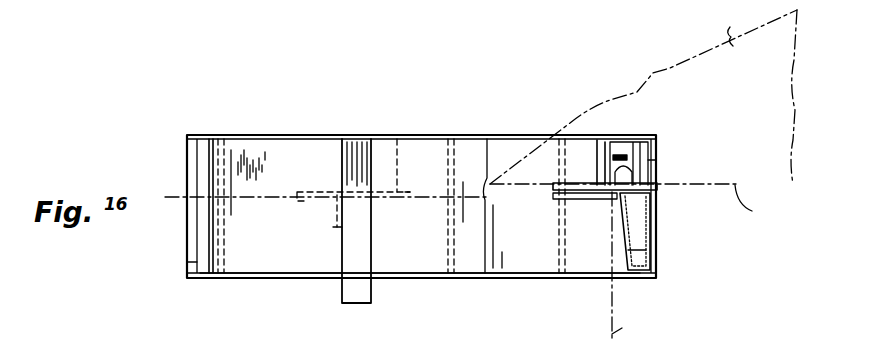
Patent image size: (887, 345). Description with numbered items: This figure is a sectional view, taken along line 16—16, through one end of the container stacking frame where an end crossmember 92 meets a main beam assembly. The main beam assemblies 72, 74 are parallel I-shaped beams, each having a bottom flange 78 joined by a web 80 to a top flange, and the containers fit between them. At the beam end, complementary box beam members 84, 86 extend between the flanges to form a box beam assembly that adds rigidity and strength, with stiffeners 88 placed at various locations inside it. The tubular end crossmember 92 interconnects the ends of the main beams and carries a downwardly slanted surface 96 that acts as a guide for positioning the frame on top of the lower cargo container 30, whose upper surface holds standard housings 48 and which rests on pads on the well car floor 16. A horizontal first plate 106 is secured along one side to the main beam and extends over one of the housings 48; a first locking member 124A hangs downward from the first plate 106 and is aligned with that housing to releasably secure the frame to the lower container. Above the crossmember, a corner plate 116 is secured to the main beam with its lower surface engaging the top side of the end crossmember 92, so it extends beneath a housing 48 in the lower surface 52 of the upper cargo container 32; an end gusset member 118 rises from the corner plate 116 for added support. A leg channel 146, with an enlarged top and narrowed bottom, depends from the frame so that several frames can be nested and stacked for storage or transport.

The well car floor 16 is at (144, 0).
The lower cargo container 30 is at (640, 323).
The upper cargo container 32 is at (749, 96).
The housing 48 is at (338, 228).
The lower surface 52 is at (752, 203).
The main beam assembly 72 is at (582, 133).
The main beam assembly 74 is at (456, 131).
The bottom flange 78 is at (277, 275).
The web 80 is at (192, 257).
The box beam member 84 is at (524, 137).
The box beam member 86 is at (202, 148).
The stiffener 88 is at (223, 158).
The end crossmember 92 is at (657, 247).
The downwardly slanted surface 96 is at (623, 252).
The first plate 106 is at (410, 192).
The corner plate 116 is at (593, 192).
The end gusset member 118 is at (653, 133).
The first locking member 124A is at (331, 211).
The leg channel 146 is at (340, 303).